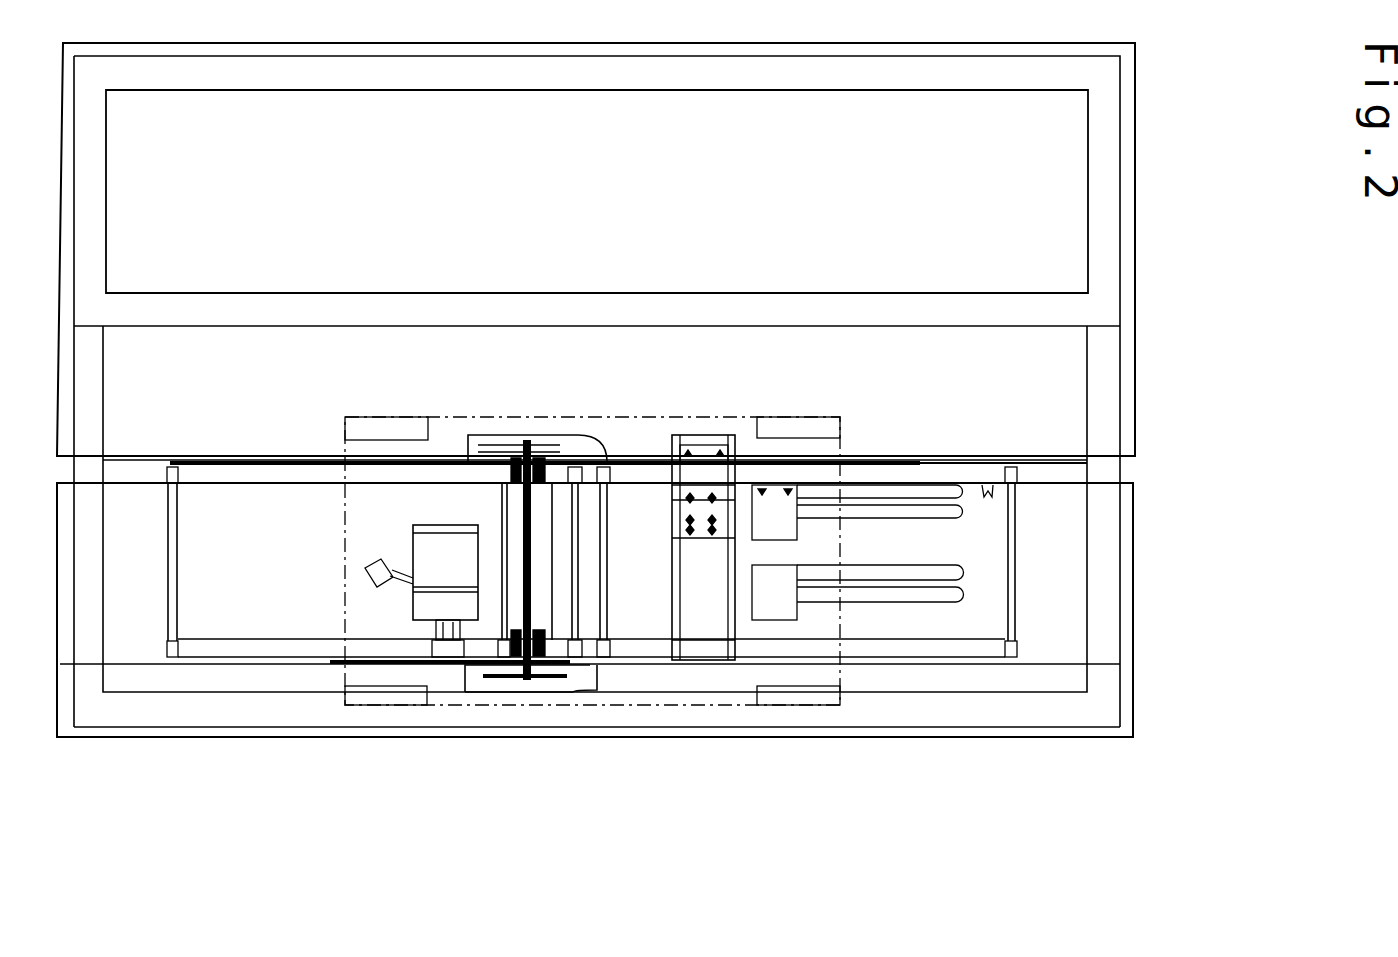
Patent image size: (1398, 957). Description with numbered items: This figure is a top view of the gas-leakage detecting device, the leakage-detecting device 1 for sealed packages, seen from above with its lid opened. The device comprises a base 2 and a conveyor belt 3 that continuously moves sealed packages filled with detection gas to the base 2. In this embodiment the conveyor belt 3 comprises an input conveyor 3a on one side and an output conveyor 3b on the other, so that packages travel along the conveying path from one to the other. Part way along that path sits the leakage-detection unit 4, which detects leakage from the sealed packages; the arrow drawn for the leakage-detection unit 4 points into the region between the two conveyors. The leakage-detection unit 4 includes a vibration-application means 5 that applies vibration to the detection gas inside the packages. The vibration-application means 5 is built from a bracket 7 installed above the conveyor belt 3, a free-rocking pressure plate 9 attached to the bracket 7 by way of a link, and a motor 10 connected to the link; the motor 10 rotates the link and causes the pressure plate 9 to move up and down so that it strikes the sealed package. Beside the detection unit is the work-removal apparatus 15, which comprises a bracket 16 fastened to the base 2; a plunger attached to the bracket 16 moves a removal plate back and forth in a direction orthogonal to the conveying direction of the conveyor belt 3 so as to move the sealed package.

The leakage-detecting device 1 is at (1135, 374).
The base 2 is at (892, 737).
The conveyor belt 3 is at (636, 652).
The input conveyor 3a is at (302, 605).
The output conveyor 3b is at (955, 623).
The leakage-detection unit 4 is at (635, 518).
The vibration-application means 5 is at (576, 538).
The bracket 7 is at (500, 673).
The pressure plate 9 is at (510, 513).
The motor 10 is at (447, 525).
The work-removal apparatus 15 is at (821, 512).
The bracket 16 is at (703, 450).